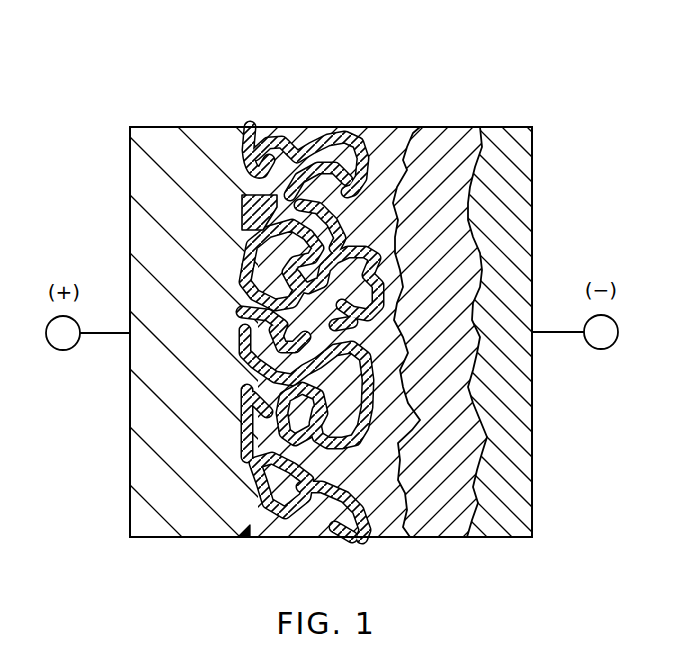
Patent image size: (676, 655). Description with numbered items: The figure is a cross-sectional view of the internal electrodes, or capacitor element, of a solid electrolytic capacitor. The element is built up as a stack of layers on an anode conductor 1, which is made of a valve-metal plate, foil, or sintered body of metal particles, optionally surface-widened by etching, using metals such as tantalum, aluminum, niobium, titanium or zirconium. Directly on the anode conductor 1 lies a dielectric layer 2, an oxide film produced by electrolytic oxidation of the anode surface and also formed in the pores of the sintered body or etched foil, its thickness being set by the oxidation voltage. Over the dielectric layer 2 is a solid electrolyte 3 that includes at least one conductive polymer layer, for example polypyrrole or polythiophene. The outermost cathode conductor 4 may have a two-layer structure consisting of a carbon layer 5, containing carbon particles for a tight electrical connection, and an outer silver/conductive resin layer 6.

The anode conductor 1 is at (197, 127).
The dielectric layer 2 is at (248, 127).
The solid electrolyte 3 is at (377, 127).
The cathode conductor 4 is at (338, 268).
The carbon layer 5 is at (447, 127).
The silver/conductive resin layer 6 is at (428, 50).